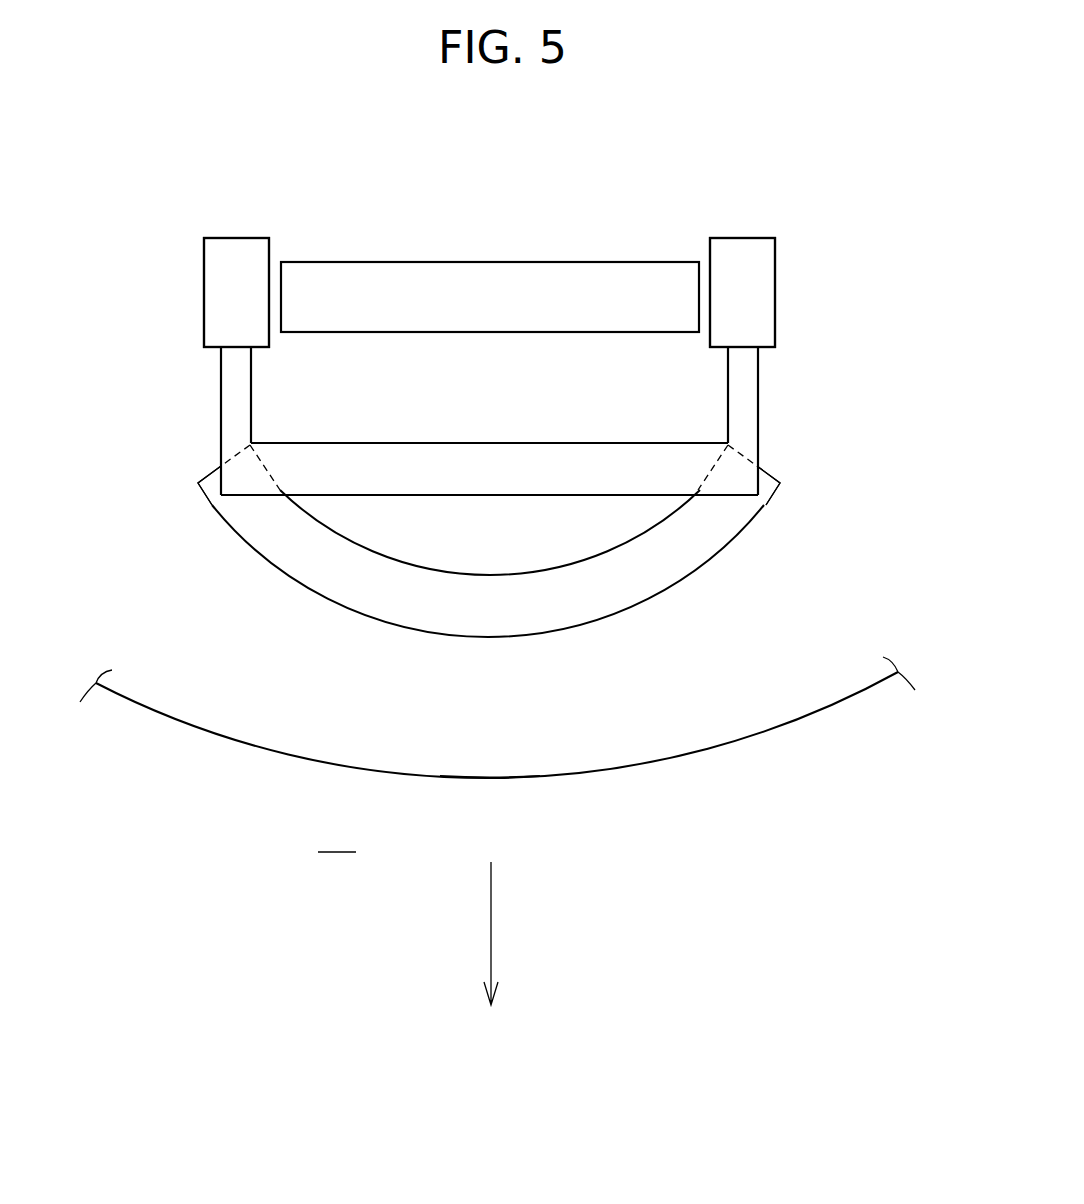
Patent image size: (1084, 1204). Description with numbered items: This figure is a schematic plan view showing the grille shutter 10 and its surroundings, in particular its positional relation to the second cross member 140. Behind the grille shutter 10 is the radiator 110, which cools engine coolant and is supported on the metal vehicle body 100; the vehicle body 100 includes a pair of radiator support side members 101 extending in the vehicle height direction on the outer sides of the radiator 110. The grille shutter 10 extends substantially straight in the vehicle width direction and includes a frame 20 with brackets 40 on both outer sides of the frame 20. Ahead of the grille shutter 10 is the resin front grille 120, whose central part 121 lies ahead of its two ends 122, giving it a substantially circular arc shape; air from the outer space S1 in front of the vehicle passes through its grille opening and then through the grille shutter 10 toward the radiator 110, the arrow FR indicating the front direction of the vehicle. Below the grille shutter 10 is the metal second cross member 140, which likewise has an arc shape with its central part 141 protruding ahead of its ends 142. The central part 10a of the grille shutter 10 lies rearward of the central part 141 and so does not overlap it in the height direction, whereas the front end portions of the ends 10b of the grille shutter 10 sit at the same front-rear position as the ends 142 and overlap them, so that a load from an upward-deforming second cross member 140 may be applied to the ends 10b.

The radiator support side member 101 is at (240, 267).
The vehicle body 100 is at (489, 292).
The radiator 110 is at (470, 282).
The bracket 40 is at (235, 405).
The grille shutter 10 is at (528, 441).
The central part of the grille shutter 10a is at (493, 472).
The end of the grille shutter 10b is at (233, 449).
The frame 20 is at (618, 465).
The second cross member 140 is at (661, 592).
The central part of the second cross member 141 is at (493, 612).
The end of the second cross member 142 is at (232, 505).
The front grille 120 is at (695, 758).
The central part of the front grille 121 is at (490, 779).
The end of the front grille 122 is at (120, 698).
The outer space S1 is at (337, 838).
The front direction FR is at (490, 955).